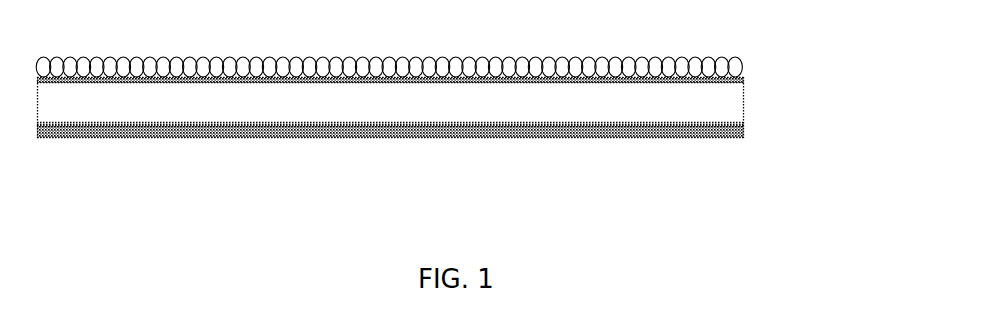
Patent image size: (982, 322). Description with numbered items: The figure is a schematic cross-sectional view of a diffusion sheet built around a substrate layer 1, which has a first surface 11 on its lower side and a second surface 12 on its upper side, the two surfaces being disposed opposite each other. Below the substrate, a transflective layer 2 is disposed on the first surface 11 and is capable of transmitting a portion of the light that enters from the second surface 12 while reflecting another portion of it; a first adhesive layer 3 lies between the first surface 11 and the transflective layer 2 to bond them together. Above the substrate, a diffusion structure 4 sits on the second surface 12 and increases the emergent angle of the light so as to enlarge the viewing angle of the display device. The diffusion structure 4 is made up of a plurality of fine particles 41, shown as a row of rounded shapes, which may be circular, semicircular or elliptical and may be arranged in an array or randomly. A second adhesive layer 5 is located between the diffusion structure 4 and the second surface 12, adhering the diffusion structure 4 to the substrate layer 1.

The substrate layer 1 is at (733, 103).
The transflective layer 2 is at (451, 159).
The first adhesive layer 3 is at (744, 127).
The diffusion structure 4 is at (462, 45).
The fine particles 41 is at (462, 45).
The second adhesive layer 5 is at (744, 80).
The first surface 11 is at (493, 138).
The second surface 12 is at (505, 65).